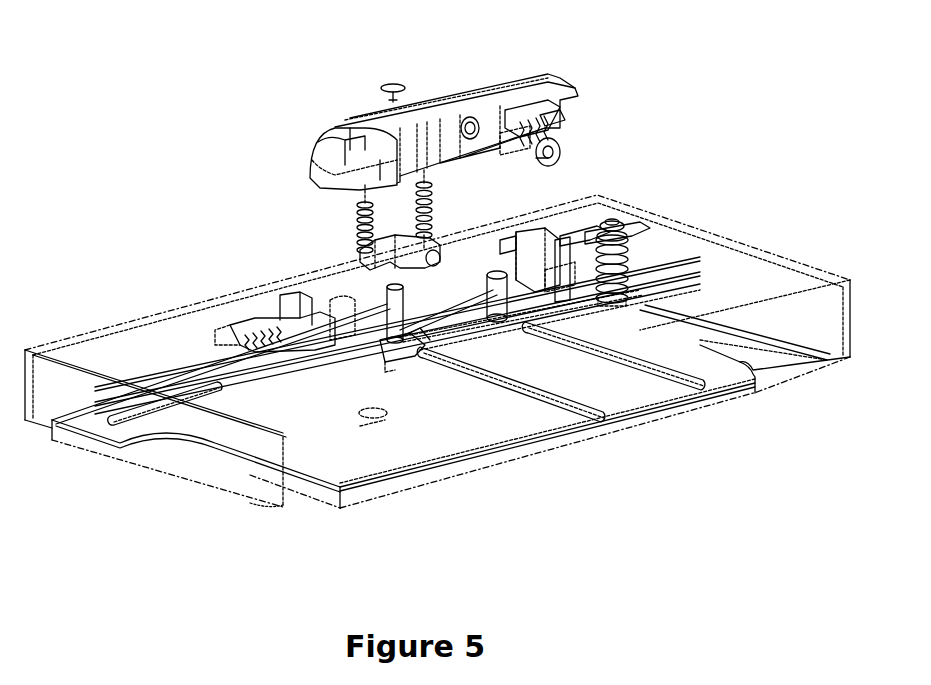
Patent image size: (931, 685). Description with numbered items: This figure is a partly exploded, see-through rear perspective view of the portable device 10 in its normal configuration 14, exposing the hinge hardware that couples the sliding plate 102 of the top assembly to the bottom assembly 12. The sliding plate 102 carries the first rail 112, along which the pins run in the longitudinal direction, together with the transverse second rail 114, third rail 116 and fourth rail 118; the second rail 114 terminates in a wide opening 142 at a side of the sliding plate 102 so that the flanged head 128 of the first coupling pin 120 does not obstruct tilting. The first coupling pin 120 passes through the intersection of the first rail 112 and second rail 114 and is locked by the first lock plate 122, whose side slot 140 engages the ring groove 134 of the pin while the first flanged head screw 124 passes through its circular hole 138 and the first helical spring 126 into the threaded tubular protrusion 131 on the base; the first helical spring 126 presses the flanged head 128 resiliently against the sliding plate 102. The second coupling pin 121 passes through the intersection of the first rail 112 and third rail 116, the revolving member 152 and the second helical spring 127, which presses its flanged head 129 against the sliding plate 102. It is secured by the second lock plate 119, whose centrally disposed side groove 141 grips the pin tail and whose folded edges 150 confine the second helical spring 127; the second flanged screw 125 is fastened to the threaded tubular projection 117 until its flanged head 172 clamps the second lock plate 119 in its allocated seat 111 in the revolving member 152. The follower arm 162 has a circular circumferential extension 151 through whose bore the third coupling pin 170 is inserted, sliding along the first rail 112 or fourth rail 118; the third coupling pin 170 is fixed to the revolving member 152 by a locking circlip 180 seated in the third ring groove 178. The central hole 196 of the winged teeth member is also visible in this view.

The portable device 10 is at (152, 255).
The bottom assembly 12 is at (130, 463).
The normal configuration 14 is at (237, 525).
The sliding plate 102 is at (660, 417).
The allocated seat 111 is at (505, 115).
The first rail 112 is at (143, 408).
The second rail 114 is at (707, 340).
The third rail 116 is at (637, 367).
The tubular projection 117 is at (460, 120).
The fourth rail 118 is at (530, 393).
The second lock plate 119 is at (525, 115).
The first coupling pin 120 is at (557, 240).
The second coupling pin 121 is at (487, 295).
The first lock plate 122 is at (632, 230).
The first flanged head screw 124 is at (612, 222).
The second flanged screw 125 is at (560, 156).
The first helical spring 126 is at (612, 283).
The second helical spring 127 is at (548, 125).
The flanged head 128 is at (573, 300).
The flanged head 129 is at (493, 323).
The threaded tubular protrusion 131 is at (617, 270).
The ring groove 134 is at (560, 247).
The circular hole 138 is at (625, 245).
The side slot 140 is at (520, 248).
The centrally disposed side groove 141 is at (548, 117).
The opening 142 is at (760, 370).
The folded edges 150 is at (540, 140).
The circular circumferential extension 151 is at (407, 343).
The revolving member 152 is at (360, 118).
The follower arm 162 is at (418, 350).
The third coupling pin 170 is at (387, 302).
The flanged head 172 is at (542, 163).
The third ring groove 178 is at (390, 287).
The locking circlip 180 is at (383, 88).
The central hole 196 is at (377, 248).